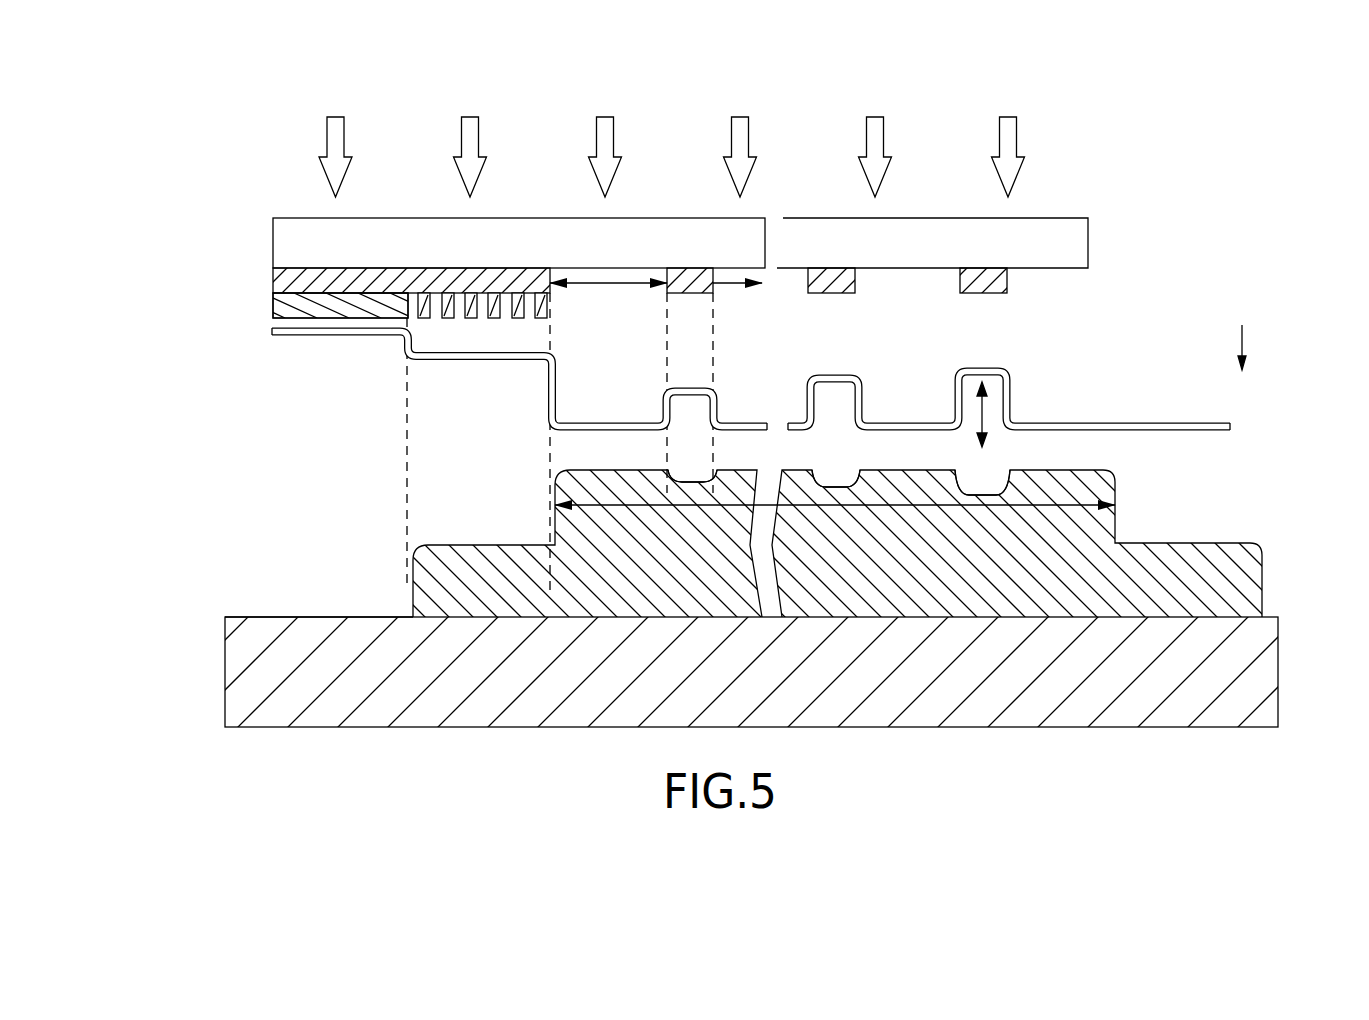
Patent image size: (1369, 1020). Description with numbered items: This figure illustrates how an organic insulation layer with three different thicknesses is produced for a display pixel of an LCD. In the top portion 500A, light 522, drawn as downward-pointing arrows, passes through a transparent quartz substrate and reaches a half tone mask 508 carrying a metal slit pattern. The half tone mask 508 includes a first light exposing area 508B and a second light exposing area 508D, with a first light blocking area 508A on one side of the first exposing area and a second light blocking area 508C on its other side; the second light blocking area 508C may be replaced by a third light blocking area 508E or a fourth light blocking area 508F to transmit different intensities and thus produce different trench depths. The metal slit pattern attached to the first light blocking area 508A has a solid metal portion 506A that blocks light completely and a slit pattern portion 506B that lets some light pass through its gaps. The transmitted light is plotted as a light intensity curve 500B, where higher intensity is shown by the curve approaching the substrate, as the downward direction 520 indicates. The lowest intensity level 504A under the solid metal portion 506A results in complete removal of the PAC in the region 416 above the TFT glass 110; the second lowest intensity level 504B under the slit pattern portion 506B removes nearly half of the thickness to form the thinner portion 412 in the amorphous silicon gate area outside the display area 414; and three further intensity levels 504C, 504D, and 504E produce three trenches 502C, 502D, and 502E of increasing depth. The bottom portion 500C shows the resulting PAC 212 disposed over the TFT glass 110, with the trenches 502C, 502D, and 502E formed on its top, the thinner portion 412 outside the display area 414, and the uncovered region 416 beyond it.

The light 522 is at (343, 126).
The top portion 500A is at (578, 280).
The half tone mask 508 is at (601, 260).
The first light blocking area 508A is at (398, 278).
The first light exposing area 508B is at (592, 283).
The second light blocking area 508C is at (683, 280).
The second light exposing area 508D is at (728, 285).
The third light blocking area 508E is at (848, 283).
The fourth light blocking area 508F is at (1000, 283).
The solid metal portion 506A is at (306, 310).
The slit pattern portion 506B is at (545, 312).
The light intensity curve 500B is at (810, 397).
The lowest intensity level 504A is at (323, 338).
The second lowest intensity level 504B is at (468, 358).
The intensity level 504C is at (703, 388).
The intensity level 504D is at (845, 376).
The intensity level 504E is at (990, 368).
The downward direction 520 is at (1290, 465).
The bottom portion 500C is at (747, 581).
The PAC 212 is at (780, 536).
The trench 502C is at (693, 482).
The trench 502D is at (838, 487).
The trench 502E is at (978, 495).
The thinner portion 412 is at (484, 545).
The display area 414 is at (843, 505).
The region 416 is at (315, 617).
The TFT glass 110 is at (745, 643).